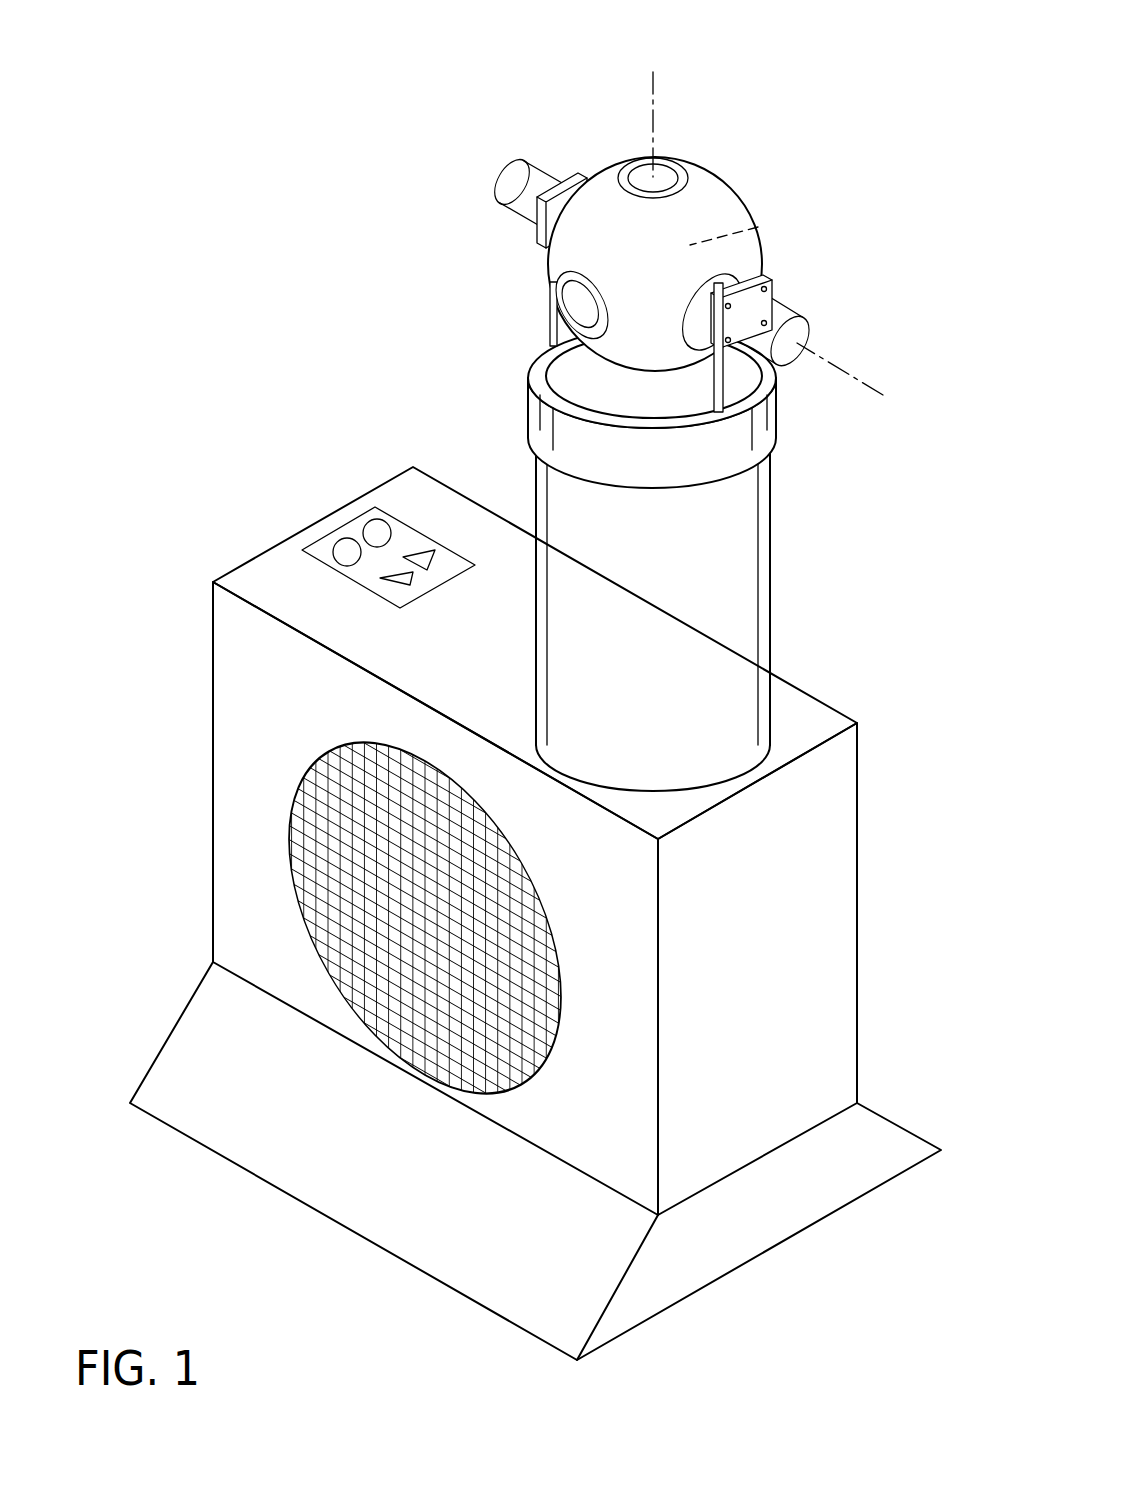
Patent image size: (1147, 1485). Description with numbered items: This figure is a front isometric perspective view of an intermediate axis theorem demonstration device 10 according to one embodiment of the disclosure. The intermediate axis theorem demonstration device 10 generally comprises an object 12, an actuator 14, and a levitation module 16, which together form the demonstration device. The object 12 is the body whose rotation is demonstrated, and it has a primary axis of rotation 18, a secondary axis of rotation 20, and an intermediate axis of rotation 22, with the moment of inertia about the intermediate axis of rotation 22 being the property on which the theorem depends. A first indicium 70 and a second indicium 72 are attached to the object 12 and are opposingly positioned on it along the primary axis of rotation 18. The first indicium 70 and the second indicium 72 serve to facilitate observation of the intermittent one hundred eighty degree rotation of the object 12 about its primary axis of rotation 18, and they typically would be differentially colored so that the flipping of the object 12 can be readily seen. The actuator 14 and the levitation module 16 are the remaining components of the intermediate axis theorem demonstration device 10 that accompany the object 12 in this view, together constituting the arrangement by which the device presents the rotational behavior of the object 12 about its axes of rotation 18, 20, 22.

The intermediate axis theorem demonstration device 10 is at (234, 302).
The object 12 is at (725, 183).
The actuator 14 is at (800, 322).
The levitation module 16 is at (213, 737).
The primary axis of rotation 18 is at (567, 308).
The secondary axis of rotation 20 is at (655, 92).
The intermediate axis of rotation 22 is at (862, 378).
The first indicium 70 is at (557, 283).
The second indicium 72 is at (758, 227).